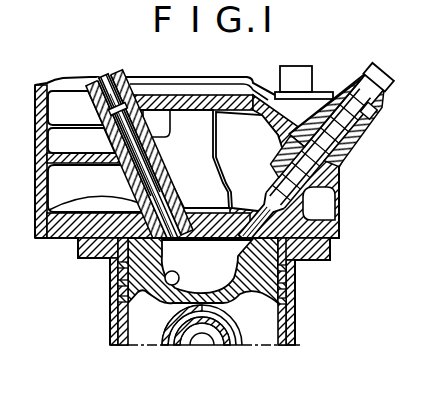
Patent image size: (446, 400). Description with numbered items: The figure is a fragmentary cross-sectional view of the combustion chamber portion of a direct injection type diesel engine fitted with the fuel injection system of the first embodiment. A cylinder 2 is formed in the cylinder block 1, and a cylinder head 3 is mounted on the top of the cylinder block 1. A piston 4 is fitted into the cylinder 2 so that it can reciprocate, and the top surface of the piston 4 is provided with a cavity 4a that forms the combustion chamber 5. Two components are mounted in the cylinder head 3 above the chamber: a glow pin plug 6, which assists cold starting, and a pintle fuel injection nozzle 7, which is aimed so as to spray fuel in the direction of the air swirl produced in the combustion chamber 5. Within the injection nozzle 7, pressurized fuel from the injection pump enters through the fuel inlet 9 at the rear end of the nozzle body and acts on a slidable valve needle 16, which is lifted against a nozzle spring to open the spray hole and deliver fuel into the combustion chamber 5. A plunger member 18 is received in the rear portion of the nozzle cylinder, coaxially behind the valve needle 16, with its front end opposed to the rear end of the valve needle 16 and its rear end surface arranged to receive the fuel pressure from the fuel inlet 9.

The cylinder block 1 is at (294, 320).
The cylinder 2 is at (281, 347).
The cylinder head 3 is at (340, 207).
The piston 4 is at (126, 347).
The cavity 4a is at (163, 300).
The combustion chamber 5 is at (219, 277).
The glow pin plug 6 is at (106, 97).
The pintle fuel injection nozzle 7 is at (349, 84).
The fuel inlet 9 is at (378, 73).
The valve needle 16 is at (344, 157).
The plunger member 18 is at (365, 107).